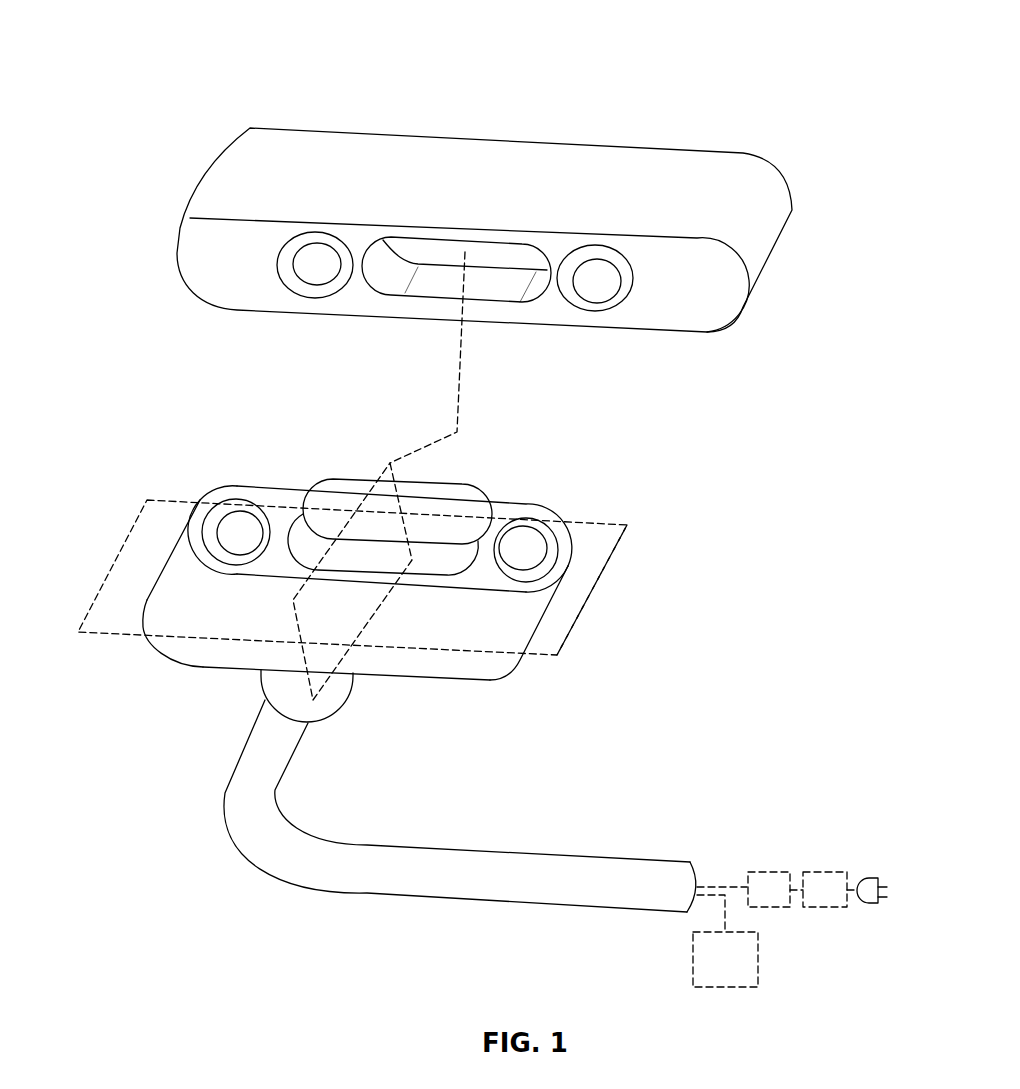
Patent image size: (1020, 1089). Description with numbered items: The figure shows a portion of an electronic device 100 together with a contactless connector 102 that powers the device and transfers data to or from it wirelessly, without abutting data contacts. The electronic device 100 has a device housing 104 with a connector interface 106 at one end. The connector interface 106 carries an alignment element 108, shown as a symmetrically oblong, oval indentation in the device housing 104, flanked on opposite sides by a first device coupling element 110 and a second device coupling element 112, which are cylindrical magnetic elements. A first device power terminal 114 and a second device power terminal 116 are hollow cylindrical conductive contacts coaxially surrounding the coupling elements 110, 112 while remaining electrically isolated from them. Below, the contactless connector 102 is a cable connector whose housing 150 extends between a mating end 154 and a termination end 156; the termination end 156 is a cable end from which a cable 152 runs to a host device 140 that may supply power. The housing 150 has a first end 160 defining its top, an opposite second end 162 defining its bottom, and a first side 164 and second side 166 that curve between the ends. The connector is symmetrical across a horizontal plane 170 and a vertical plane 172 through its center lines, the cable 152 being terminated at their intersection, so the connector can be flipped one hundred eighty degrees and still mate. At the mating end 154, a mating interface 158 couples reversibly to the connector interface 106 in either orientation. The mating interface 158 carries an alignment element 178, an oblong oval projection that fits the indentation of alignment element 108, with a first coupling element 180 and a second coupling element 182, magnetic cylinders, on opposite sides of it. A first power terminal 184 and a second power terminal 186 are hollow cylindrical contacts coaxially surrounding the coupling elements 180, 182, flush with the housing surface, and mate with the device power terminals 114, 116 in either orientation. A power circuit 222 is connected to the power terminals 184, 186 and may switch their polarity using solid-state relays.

The electronic device 100 is at (592, 116).
The contactless connector 102 is at (638, 612).
The device housing 104 is at (730, 231).
The connector interface 106 is at (523, 312).
The alignment element 108 is at (427, 272).
The first device coupling element 110 is at (317, 273).
The second device coupling element 112 is at (599, 285).
The first device power terminal 114 is at (285, 253).
The second device power terminal 116 is at (630, 288).
The host device 140 is at (758, 958).
The housing 150 is at (512, 645).
The cable 152 is at (487, 850).
The mating end 154 is at (215, 468).
The termination end 156 is at (240, 695).
The mating interface 158 is at (458, 470).
The first end 160 is at (237, 635).
The second end 162 is at (287, 487).
The first side 164 is at (157, 573).
The second side 166 is at (543, 623).
The horizontal plane 170 is at (620, 545).
The vertical plane 172 is at (378, 622).
The alignment element 178 is at (463, 503).
The first coupling element 180 is at (235, 530).
The second coupling element 182 is at (527, 550).
The first power terminal 184 is at (240, 500).
The second power terminal 186 is at (550, 560).
The power circuit 222 is at (848, 872).